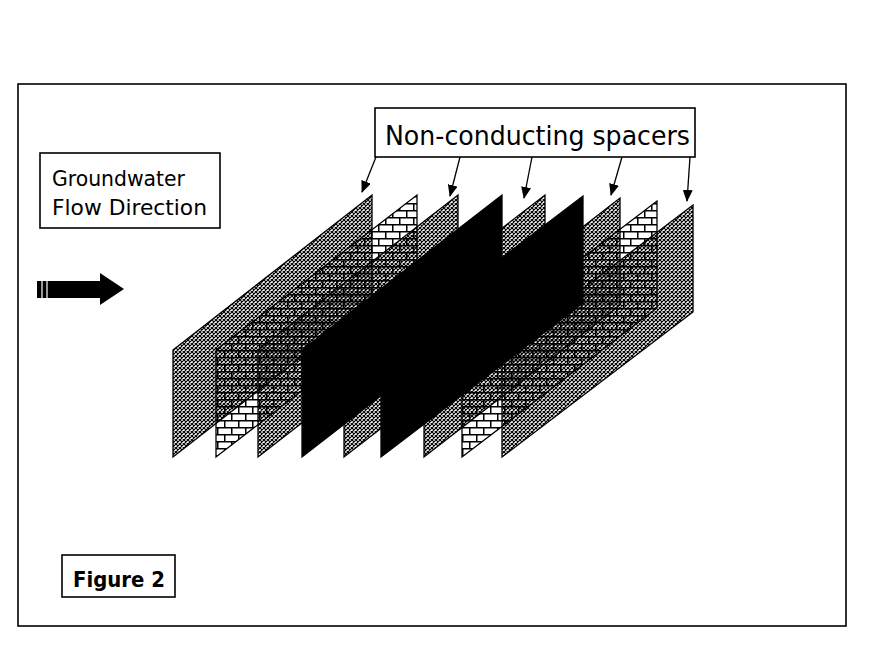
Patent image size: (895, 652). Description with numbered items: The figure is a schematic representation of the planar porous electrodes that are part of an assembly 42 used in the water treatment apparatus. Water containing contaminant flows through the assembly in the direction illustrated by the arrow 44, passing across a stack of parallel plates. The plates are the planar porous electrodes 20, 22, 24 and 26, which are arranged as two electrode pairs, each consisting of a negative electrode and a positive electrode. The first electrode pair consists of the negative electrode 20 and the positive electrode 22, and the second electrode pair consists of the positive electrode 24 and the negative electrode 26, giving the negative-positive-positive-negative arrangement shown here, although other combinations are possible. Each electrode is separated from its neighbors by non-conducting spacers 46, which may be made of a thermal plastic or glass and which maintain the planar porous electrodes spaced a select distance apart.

The negative electrode 20 is at (267, 472).
The positive electrode 22 is at (313, 463).
The positive electrode 24 is at (390, 463).
The negative electrode 26 is at (467, 463).
The assembly 42 is at (243, 74).
The arrow 44 is at (69, 304).
The non-conducting spacers 46 is at (433, 395).